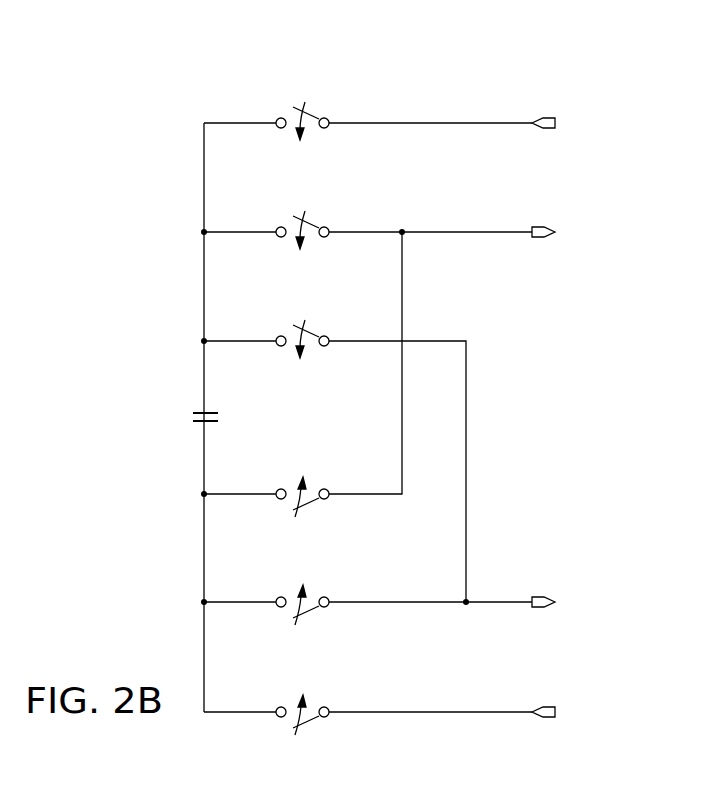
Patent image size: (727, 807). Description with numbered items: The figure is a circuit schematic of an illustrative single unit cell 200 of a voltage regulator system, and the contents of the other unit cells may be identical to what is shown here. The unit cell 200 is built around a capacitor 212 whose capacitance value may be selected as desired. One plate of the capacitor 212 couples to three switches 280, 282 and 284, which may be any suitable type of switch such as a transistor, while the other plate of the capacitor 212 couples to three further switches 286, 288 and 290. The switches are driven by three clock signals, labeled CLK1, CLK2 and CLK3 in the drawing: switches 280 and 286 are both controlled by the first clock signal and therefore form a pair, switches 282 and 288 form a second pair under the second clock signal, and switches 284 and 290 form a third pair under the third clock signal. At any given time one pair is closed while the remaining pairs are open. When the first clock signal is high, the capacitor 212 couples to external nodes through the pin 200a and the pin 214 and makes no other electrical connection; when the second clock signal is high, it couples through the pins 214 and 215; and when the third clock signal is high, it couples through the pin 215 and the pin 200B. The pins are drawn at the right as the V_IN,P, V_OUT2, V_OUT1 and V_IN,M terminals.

The unit cell 200 is at (170, 52).
The pin 200a is at (548, 117).
The pin 200B is at (547, 720).
The capacitor 212 is at (193, 413).
The pin 214 is at (543, 224).
The pin 215 is at (545, 610).
The switch 280 is at (313, 115).
The switch 282 is at (313, 224).
The switch 284 is at (313, 333).
The switch 286 is at (311, 502).
The switch 288 is at (311, 610).
The switch 290 is at (311, 720).